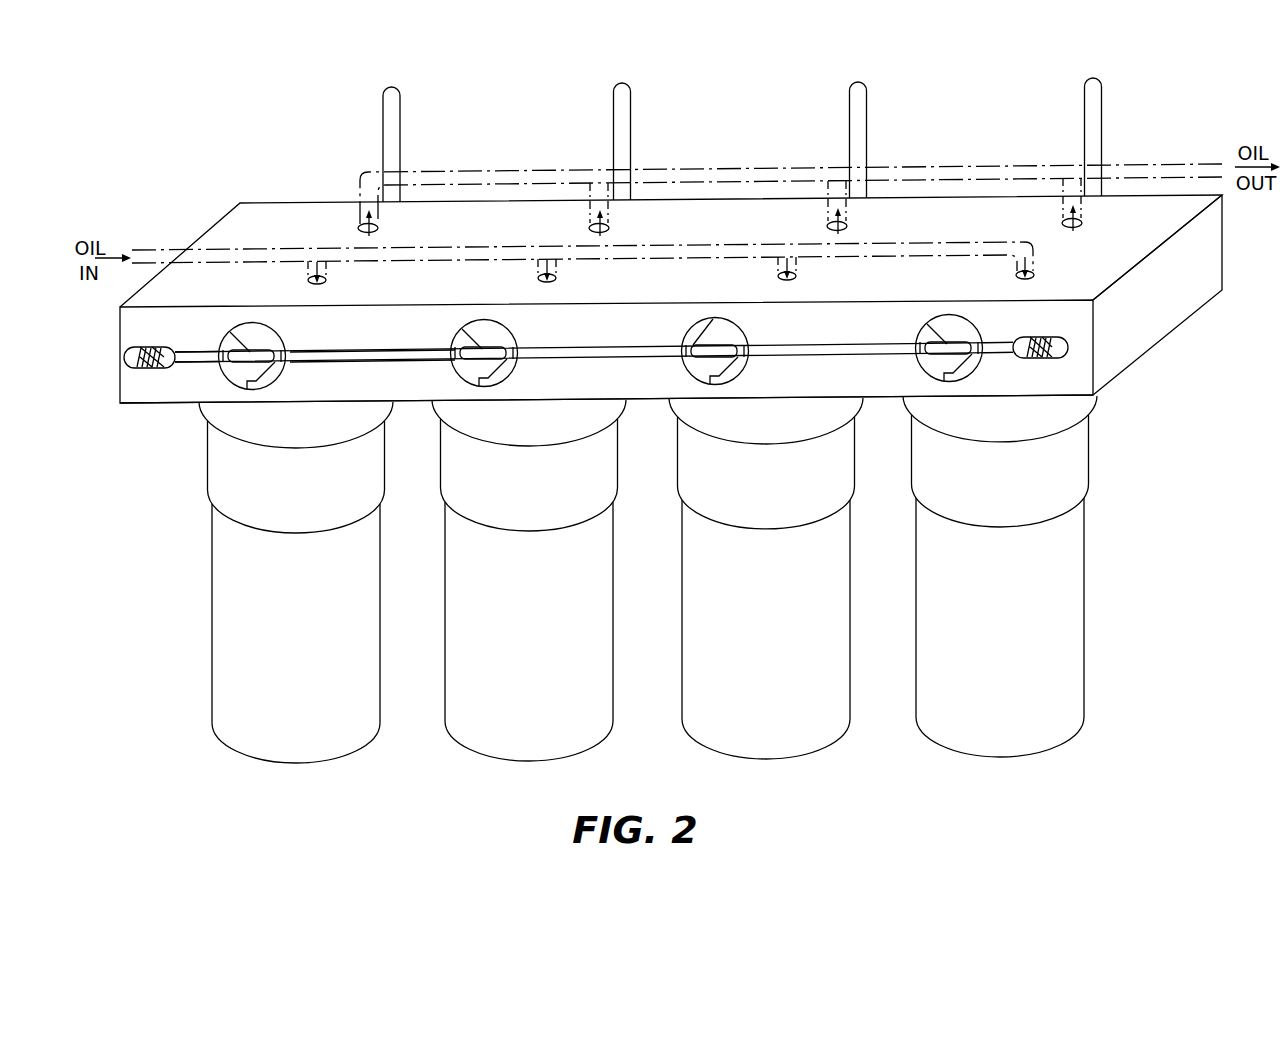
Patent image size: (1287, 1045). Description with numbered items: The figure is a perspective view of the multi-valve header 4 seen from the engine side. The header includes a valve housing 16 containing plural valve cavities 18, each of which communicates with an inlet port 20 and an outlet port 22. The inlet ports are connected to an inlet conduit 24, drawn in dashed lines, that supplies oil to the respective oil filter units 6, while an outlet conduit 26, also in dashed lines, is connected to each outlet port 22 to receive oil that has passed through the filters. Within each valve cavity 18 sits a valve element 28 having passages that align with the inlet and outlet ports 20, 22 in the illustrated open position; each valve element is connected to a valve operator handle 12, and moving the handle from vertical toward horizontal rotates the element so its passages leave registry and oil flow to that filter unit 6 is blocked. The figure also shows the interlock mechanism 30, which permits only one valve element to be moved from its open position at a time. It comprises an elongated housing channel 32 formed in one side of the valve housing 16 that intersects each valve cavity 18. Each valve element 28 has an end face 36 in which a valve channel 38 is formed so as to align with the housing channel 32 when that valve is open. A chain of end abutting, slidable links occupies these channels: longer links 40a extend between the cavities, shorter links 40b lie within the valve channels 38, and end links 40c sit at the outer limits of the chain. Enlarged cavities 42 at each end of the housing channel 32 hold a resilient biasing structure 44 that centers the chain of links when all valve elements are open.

The multi-valve header 4 is at (1190, 195).
The oil filter unit 6 is at (287, 651).
The valve operator handle 12 is at (400, 107).
The valve housing 16 is at (1187, 295).
The valve cavity 18 is at (287, 351).
The inlet port 20 is at (326, 280).
The outlet port 22 is at (378, 228).
The inlet conduit 24 is at (172, 248).
The outlet conduit 26 is at (975, 160).
The valve element 28 is at (271, 330).
The interlock mechanism 30 is at (1057, 370).
The elongated housing channel 32 is at (323, 351).
The end face 36 is at (238, 378).
The valve channel 38 is at (229, 348).
The longer link 40a is at (346, 362).
The shorter link 40b is at (249, 352).
The end link 40c is at (196, 363).
The cavity 42 is at (148, 346).
The resilient biasing structure 44 is at (152, 368).